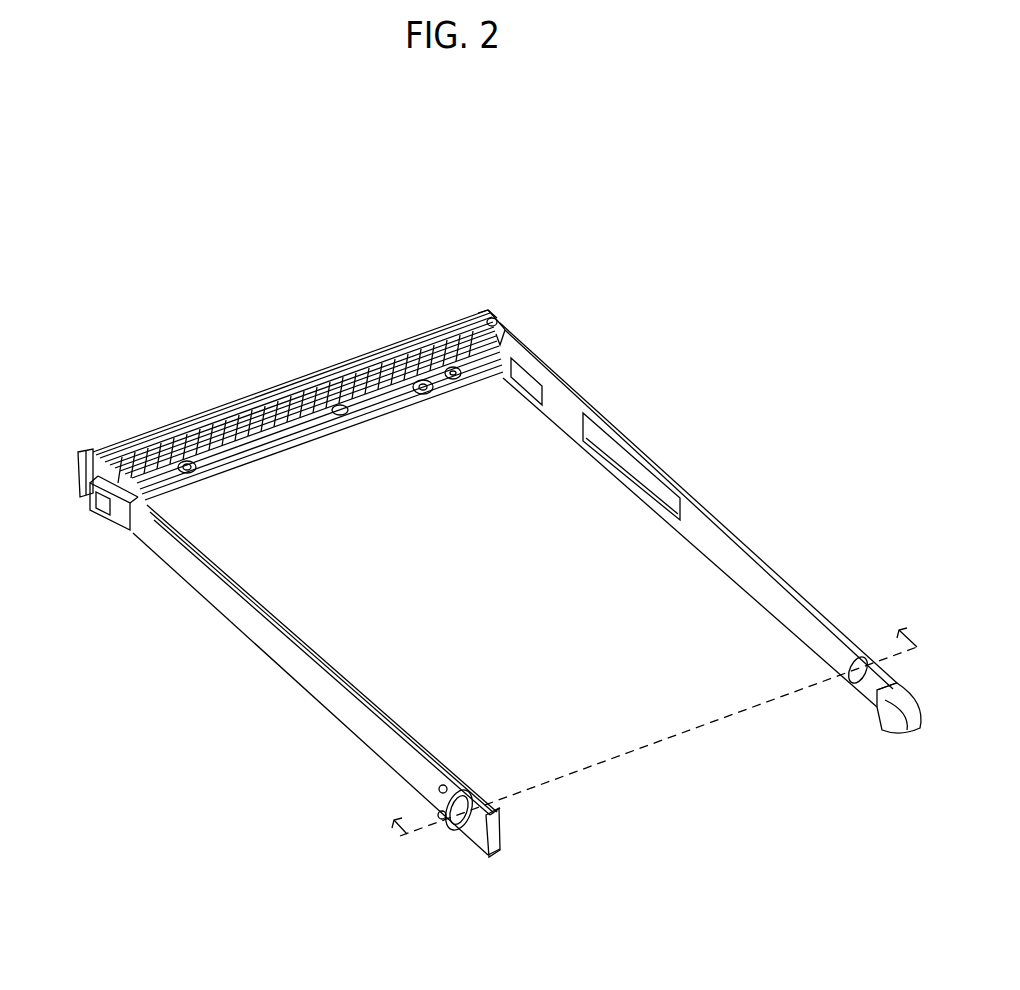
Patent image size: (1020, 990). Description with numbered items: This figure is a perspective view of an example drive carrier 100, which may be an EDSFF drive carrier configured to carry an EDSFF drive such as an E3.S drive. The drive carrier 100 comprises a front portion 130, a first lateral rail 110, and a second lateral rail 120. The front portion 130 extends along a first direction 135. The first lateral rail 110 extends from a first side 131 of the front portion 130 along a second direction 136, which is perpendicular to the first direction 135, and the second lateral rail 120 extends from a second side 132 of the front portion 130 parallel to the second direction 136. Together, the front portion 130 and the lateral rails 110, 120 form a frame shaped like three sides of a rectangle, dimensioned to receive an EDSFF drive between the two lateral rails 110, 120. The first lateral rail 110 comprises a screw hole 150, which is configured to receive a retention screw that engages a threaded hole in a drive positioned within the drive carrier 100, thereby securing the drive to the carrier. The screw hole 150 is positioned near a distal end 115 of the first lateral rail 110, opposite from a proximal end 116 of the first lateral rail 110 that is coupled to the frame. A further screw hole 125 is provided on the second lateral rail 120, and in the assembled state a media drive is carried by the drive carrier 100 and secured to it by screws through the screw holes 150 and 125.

The drive carrier 100 is at (221, 290).
The first lateral rail 110 is at (328, 708).
The distal end 115 is at (506, 871).
The proximal end 116 is at (95, 540).
The second lateral rail 120 is at (733, 555).
The screw hole 125 is at (850, 680).
The front portion 130 is at (330, 364).
The first side 131 is at (96, 428).
The second side 132 is at (476, 297).
The first direction 135 is at (243, 370).
The second direction 136 is at (249, 550).
The screw hole 150 is at (457, 838).